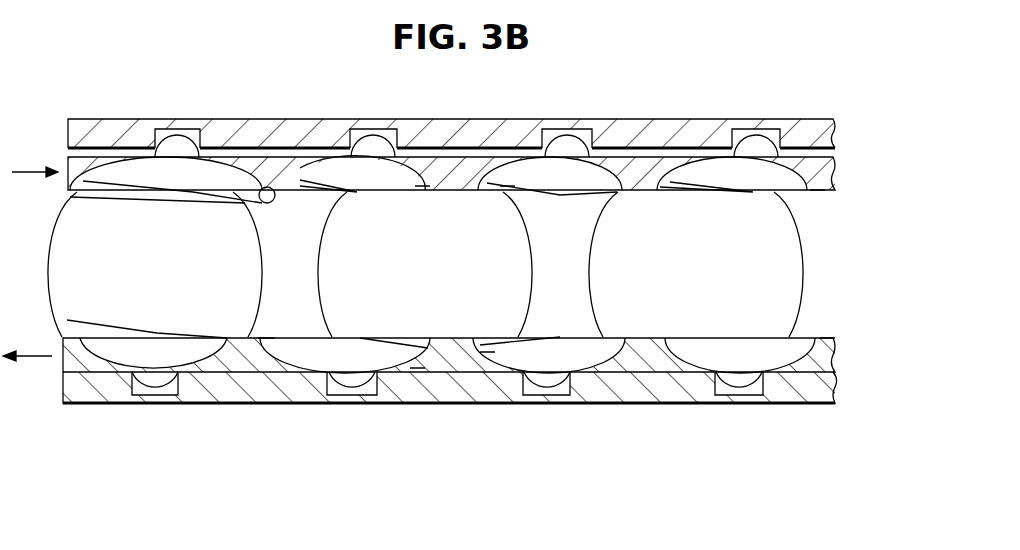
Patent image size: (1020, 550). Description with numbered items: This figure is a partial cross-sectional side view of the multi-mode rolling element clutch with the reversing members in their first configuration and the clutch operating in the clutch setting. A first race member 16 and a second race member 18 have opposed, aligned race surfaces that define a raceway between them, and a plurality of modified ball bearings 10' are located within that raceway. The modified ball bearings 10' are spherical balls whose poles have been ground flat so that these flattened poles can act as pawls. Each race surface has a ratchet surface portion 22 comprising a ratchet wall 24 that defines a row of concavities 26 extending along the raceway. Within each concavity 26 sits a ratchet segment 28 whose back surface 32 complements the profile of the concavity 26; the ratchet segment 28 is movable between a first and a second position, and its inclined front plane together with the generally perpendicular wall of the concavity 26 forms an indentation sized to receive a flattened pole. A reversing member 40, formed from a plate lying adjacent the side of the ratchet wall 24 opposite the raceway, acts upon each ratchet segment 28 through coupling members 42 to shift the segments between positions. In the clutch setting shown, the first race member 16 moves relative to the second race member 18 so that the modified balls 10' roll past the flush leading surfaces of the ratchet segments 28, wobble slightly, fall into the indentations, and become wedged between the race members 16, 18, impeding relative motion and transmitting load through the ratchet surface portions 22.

The modified ball bearing 10' is at (425, 264).
The first race member 16 is at (838, 165).
The second race member 18 is at (837, 352).
The ratchet surface portion 22 is at (827, 337).
The ratchet wall 24 is at (68, 158).
The concavity 26 is at (267, 187).
The ratchet segment 28 is at (507, 188).
The back surface 32 is at (305, 132).
The reversing member 40 is at (833, 119).
The coupling member 42 is at (177, 137).